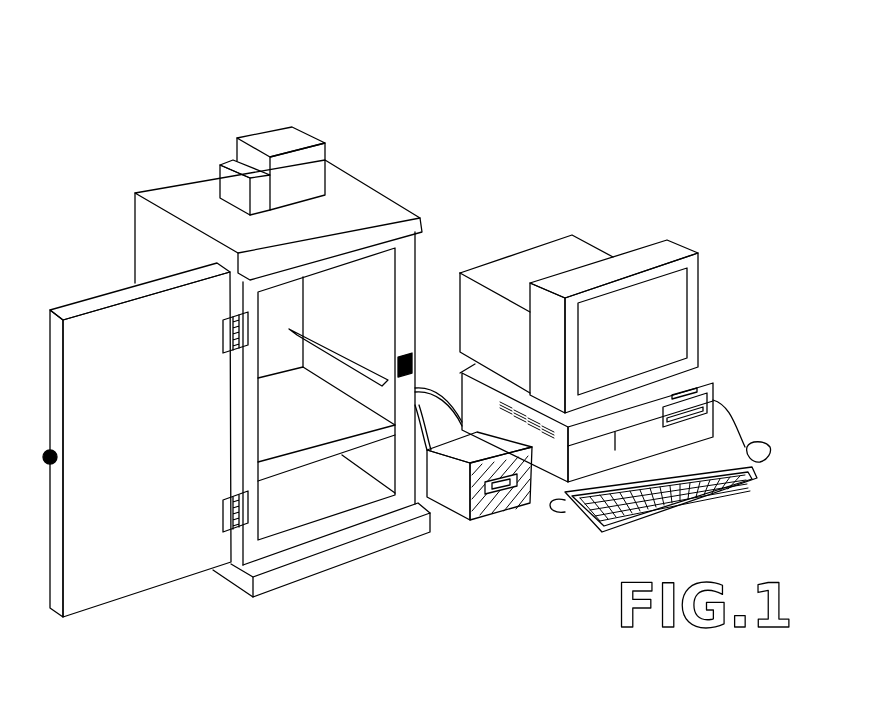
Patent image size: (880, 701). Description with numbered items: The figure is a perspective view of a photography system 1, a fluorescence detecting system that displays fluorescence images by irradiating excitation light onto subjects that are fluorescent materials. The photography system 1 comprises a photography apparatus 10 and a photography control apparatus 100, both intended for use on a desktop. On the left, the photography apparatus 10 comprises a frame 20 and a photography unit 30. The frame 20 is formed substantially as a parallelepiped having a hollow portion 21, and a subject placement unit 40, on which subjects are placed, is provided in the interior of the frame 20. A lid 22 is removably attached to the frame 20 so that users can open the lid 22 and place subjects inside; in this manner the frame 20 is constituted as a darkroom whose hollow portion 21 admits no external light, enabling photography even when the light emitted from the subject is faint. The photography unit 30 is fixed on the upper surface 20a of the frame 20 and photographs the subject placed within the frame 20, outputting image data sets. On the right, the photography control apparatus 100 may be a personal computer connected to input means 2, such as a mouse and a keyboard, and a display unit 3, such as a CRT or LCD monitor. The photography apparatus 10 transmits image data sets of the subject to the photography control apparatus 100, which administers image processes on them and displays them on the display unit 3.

The photography system 1 is at (512, 64).
The photography apparatus 10 is at (265, 114).
The frame 20 is at (163, 189).
The upper surface 20a is at (367, 195).
The hollow portion 21 is at (363, 278).
The lid 22 is at (132, 587).
The photography unit 30 is at (329, 153).
The subject placement unit 40 is at (350, 443).
The photography control apparatus 100 is at (642, 178).
The display unit 3 is at (692, 297).
The input means 2 is at (770, 465).